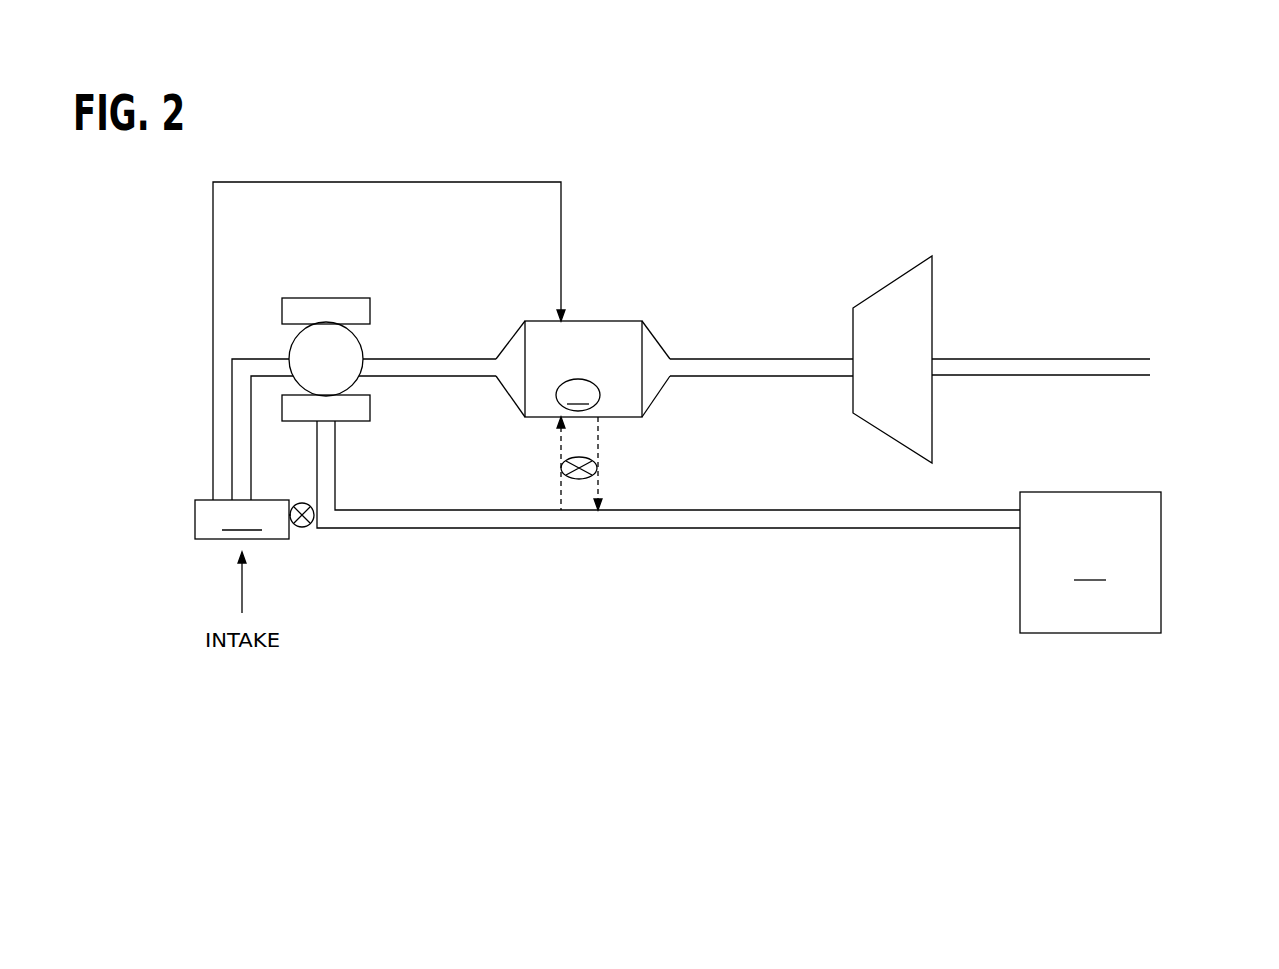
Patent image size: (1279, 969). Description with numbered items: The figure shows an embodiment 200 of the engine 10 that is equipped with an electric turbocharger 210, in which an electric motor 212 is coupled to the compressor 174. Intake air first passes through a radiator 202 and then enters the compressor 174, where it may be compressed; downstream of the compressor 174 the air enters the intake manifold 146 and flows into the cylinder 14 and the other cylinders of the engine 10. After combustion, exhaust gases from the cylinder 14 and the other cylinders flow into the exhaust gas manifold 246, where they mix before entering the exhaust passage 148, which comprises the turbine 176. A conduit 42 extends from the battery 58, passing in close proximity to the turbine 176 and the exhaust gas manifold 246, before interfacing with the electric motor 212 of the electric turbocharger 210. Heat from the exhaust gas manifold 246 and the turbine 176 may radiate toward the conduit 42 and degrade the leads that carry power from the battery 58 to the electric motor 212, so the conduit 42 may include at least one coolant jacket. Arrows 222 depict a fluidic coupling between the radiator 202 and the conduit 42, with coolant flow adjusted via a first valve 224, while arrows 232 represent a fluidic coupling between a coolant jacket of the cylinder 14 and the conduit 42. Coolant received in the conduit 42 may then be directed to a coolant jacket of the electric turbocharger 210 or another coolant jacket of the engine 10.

The embodiment 200 is at (1195, 157).
The electric turbocharger 210 is at (358, 317).
The electric motor 212 is at (322, 297).
The compressor 174 is at (362, 350).
The intake manifold 146 is at (509, 342).
The engine 10 is at (584, 351).
The cylinder 14 is at (578, 395).
The exhaust gas manifold 246 is at (657, 342).
The exhaust passage 148 is at (738, 358).
The turbine 176 is at (933, 418).
The arrows 232 is at (562, 464).
The conduit 42 is at (765, 510).
The battery 58 is at (1090, 562).
The radiator 202 is at (242, 519).
The arrows 222 is at (308, 499).
The first valve 224 is at (290, 523).